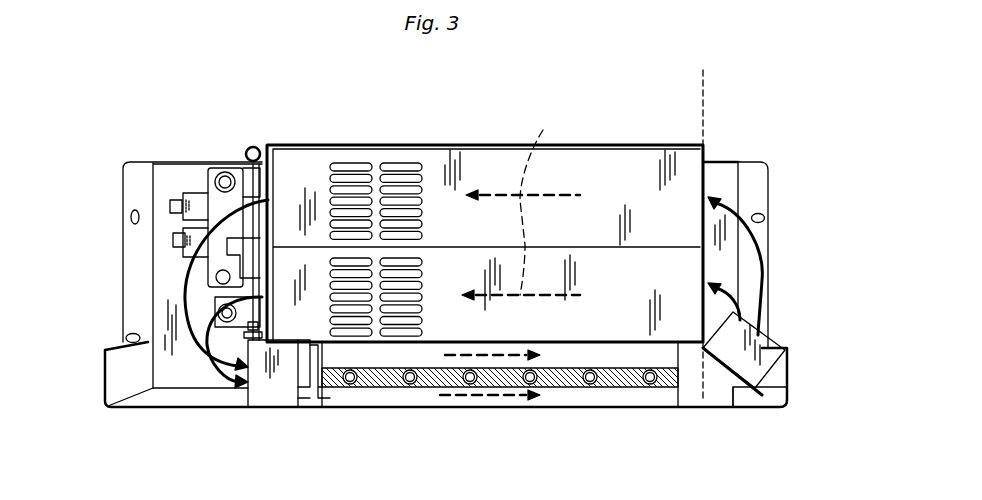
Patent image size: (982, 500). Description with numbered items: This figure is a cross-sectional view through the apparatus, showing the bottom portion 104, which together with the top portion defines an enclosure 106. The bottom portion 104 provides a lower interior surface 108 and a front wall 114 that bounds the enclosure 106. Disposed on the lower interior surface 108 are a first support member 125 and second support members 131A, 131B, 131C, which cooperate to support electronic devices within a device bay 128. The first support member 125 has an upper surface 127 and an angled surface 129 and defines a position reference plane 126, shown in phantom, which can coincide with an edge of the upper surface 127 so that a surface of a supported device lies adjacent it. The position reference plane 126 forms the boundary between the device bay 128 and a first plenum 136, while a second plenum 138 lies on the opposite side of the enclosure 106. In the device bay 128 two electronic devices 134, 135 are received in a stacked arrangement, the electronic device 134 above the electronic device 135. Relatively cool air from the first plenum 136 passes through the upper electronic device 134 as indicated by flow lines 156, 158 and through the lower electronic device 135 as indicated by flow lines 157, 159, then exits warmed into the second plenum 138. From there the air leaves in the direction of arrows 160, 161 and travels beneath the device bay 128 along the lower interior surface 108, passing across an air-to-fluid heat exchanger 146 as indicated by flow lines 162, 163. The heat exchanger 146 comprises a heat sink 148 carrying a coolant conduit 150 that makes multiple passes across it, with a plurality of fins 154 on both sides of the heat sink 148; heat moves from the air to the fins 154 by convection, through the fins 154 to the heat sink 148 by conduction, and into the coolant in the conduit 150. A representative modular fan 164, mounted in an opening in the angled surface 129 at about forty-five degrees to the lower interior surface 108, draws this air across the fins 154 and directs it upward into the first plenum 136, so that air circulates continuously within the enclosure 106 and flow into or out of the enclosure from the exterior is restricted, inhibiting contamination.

The bottom portion 104 is at (105, 382).
The enclosure 106 is at (425, 125).
The lower interior surface 108 is at (180, 402).
The front wall 114 is at (207, 158).
The first support member 125 is at (710, 385).
The position reference plane 126 is at (708, 88).
The upper surface 127 is at (686, 342).
The device bay 128 is at (352, 140).
The angled surface 129 is at (757, 388).
The second support member 131A is at (263, 400).
The second support member 131B is at (302, 387).
The second support member 131C is at (312, 387).
The electronic device 134 is at (570, 143).
The electronic device 135 is at (575, 327).
The first plenum 136 is at (751, 177).
The second plenum 138 is at (162, 150).
The air-to-fluid heat exchanger 146 is at (340, 396).
The heat sink 148 is at (623, 382).
The coolant conduit 150 is at (355, 383).
The fins 154 is at (592, 362).
The flow line 156 is at (763, 273).
The flow line 157 is at (763, 215).
The flow line 158 is at (542, 198).
The flow line 159 is at (521, 245).
The flow line 160 is at (183, 295).
The flow line 161 is at (182, 294).
The flow line 162 is at (497, 405).
The flow line 163 is at (437, 390).
The fan 164 is at (768, 352).